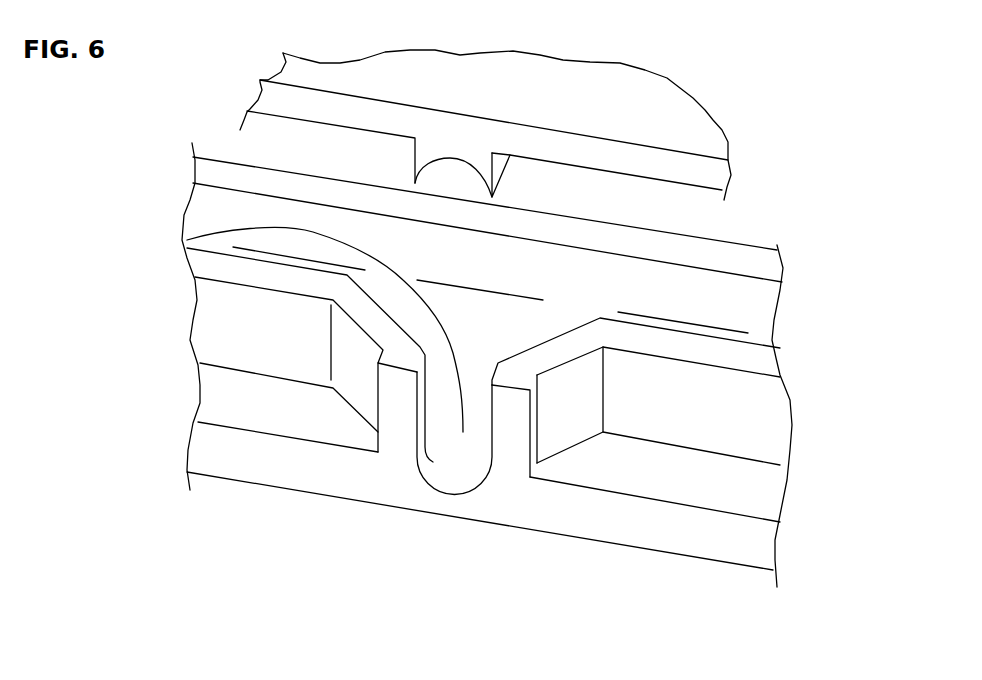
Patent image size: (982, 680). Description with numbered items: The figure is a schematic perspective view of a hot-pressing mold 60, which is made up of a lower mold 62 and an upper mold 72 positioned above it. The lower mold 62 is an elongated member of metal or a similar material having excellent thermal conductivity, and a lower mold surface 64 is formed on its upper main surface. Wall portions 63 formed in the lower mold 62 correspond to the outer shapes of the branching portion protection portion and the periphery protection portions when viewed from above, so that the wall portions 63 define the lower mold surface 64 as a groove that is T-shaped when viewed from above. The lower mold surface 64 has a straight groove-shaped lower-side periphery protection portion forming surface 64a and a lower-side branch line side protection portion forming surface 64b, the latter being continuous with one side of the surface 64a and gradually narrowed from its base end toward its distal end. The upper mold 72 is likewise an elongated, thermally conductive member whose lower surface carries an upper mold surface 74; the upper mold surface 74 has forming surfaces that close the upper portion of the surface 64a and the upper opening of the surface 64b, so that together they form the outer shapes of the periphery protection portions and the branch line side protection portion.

The hot-pressing mold 60 is at (708, 88).
The lower mold 62 is at (725, 565).
The wall portions 63 is at (768, 268).
The lower mold surface 64 is at (97, 172).
The lower-side periphery protection portion forming surface 64a is at (232, 212).
The lower-side branch line side protection portion forming surface 64b is at (190, 240).
The upper mold 72 is at (618, 63).
The upper mold surface 74 is at (495, 198).